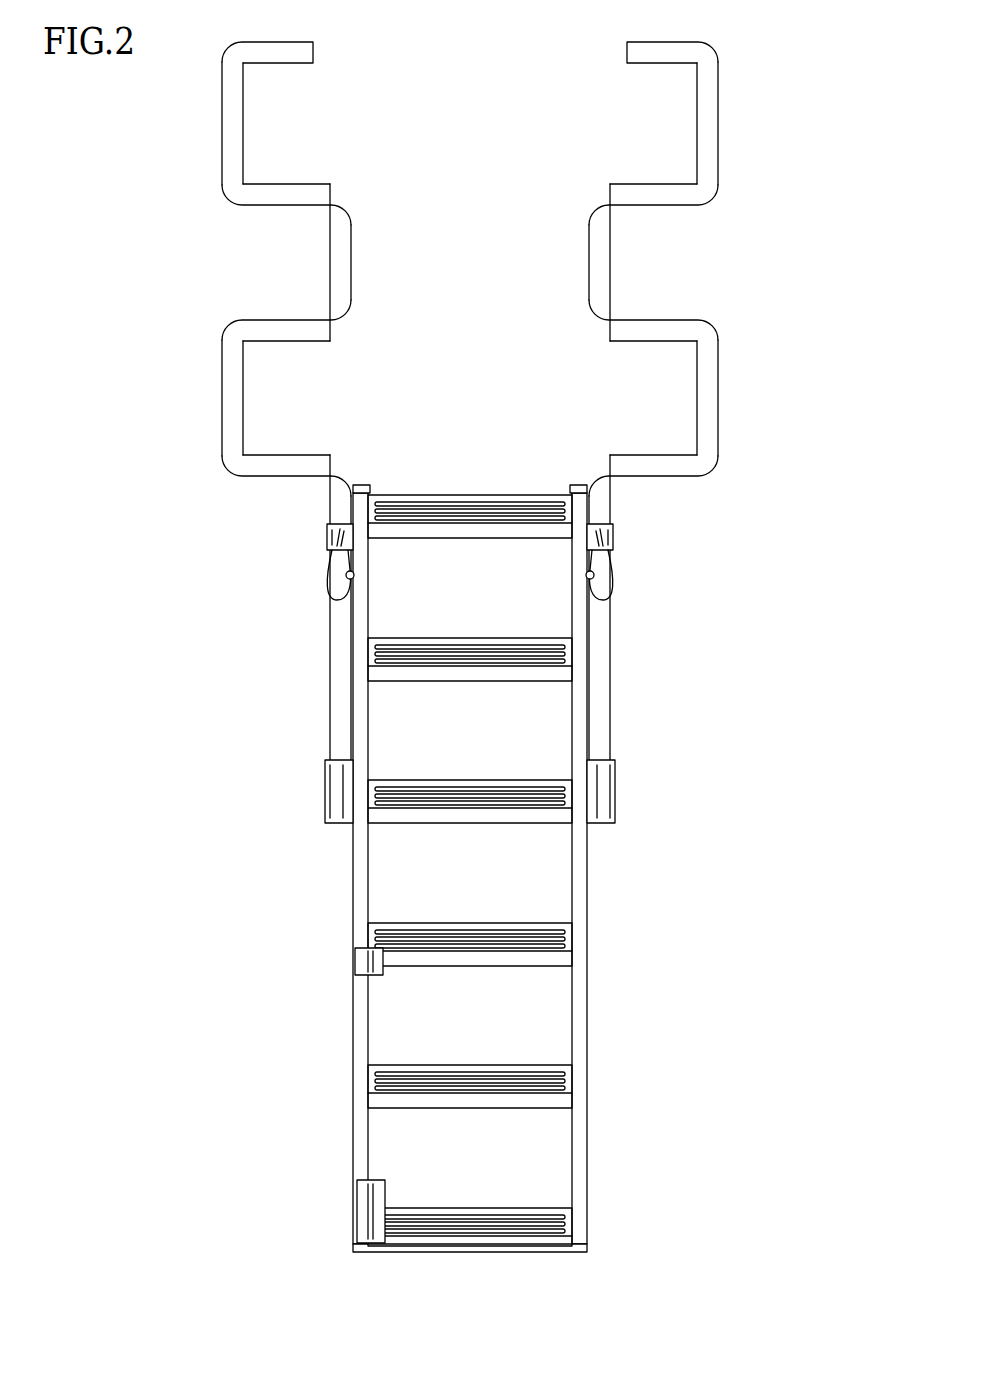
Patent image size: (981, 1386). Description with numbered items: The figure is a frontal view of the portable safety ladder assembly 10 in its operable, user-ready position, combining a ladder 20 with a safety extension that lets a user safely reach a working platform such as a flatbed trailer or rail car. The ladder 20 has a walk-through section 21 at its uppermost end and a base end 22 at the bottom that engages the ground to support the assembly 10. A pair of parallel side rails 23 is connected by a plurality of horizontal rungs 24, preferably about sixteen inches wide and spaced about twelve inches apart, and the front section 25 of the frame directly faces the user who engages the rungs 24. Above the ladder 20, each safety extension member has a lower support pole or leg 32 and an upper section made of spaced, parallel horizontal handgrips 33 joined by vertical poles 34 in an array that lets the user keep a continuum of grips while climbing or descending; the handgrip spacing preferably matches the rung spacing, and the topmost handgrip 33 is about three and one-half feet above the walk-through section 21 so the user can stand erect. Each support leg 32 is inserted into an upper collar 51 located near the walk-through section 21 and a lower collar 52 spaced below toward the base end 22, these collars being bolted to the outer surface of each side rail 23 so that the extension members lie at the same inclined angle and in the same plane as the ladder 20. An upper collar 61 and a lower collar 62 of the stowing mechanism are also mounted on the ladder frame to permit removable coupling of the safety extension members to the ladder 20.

The portable safety ladder assembly 10 is at (92, 209).
The ladder 20 is at (256, 907).
The walk-through section 21 is at (440, 490).
The base end 22 is at (540, 1252).
The side rails 23 is at (588, 1030).
The horizontal rungs 24 is at (396, 512).
The front section 25 is at (468, 899).
The support pole or leg 32 is at (334, 655).
The horizontal handgrips 33 is at (266, 48).
The vertical poles 34 is at (230, 145).
The upper collar 51 is at (326, 543).
The lower collar 52 is at (334, 800).
The upper collar 61 is at (355, 963).
The lower collar 62 is at (356, 1210).